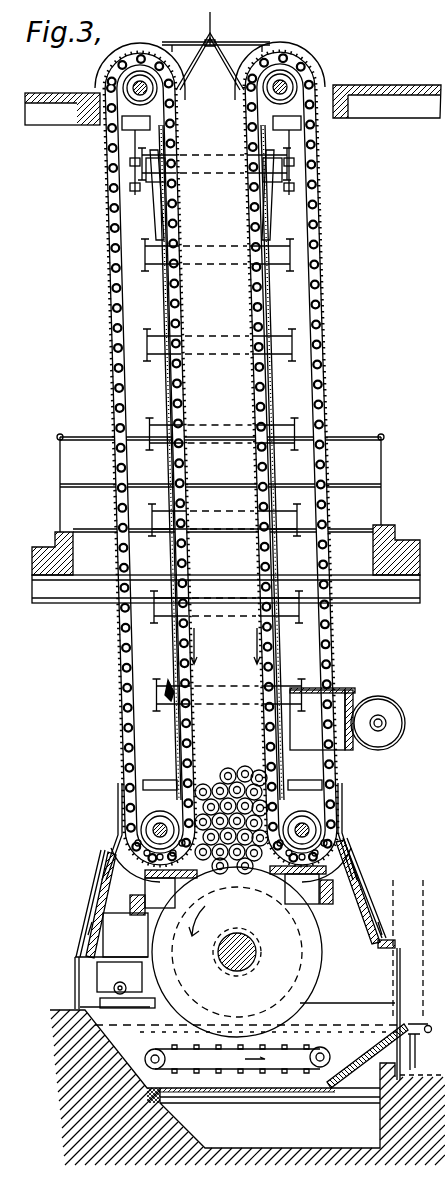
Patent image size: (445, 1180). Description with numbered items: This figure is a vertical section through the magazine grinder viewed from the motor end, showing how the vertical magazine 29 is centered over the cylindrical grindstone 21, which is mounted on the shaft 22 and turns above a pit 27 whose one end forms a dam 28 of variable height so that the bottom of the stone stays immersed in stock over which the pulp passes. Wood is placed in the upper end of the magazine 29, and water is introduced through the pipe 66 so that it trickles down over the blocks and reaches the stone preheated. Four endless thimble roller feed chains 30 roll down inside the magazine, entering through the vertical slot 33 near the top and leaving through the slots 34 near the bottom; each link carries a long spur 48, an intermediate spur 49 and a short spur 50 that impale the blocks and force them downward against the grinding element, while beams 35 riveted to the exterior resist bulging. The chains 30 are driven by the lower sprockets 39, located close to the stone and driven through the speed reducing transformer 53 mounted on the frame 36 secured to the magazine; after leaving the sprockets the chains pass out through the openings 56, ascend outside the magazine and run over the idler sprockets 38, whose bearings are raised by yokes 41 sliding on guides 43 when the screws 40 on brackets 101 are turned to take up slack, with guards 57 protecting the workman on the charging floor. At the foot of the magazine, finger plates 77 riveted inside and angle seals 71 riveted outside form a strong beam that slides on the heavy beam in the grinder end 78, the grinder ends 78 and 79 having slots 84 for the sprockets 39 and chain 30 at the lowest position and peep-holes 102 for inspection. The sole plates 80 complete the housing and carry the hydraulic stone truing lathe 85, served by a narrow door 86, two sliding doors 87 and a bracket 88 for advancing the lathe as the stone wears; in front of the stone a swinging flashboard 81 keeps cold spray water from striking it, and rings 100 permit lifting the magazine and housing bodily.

The grindstone 21 is at (322, 971).
The shaft 22 is at (258, 960).
The pit 27 is at (237, 1048).
The dam 28 is at (378, 1052).
The magazine 29 is at (282, 660).
The feed chains 30 is at (107, 72).
The vertical slot 33 is at (270, 42).
The slots 34 is at (166, 790).
The beams 35 is at (224, 429).
The frame 36 is at (352, 690).
The idler sprockets 38 is at (141, 80).
The sprockets 39 is at (153, 818).
The screws 40 is at (133, 150).
The yokes 41 is at (128, 131).
The guides 43 is at (131, 163).
The long spur 48 is at (110, 292).
The intermediate spur 49 is at (109, 300).
The short spur 50 is at (109, 309).
The speed reducing transformer 53 is at (405, 711).
The openings 56 is at (119, 788).
The guards 57 is at (97, 79).
The pipe 66 is at (207, 22).
The angle seals 71 is at (292, 908).
The finger plates 77 is at (276, 881).
The grinder end 78 is at (99, 868).
The grinder end 79 is at (373, 870).
The sole plates 80 is at (395, 975).
The swinging flashboard 81 is at (146, 940).
The slots 84 is at (336, 868).
The stone truing lathe 85 is at (112, 997).
The narrow door 86 is at (74, 961).
The sliding doors 87 is at (74, 996).
The bracket 88 is at (130, 1005).
The rings 100 is at (220, 42).
The brackets 101 is at (153, 209).
The peep-holes 102 is at (92, 922).